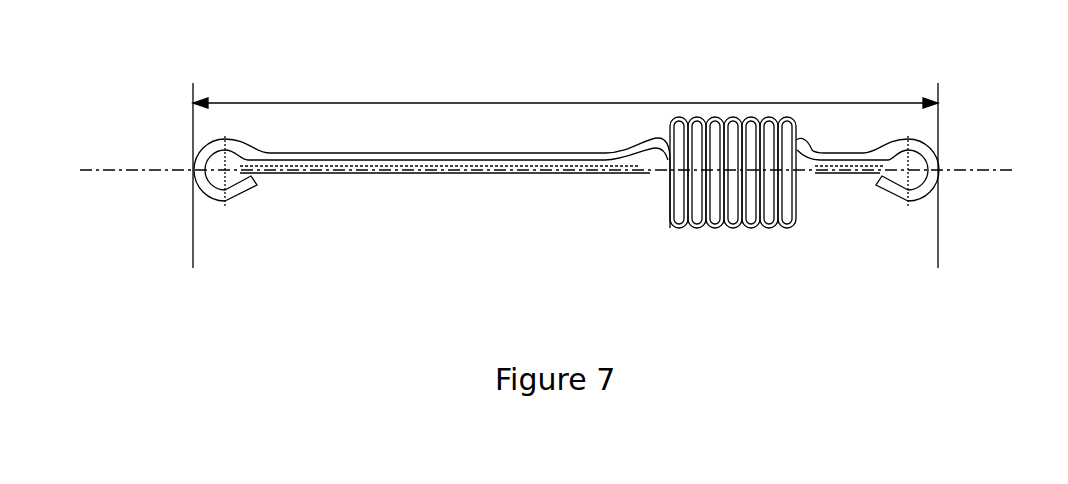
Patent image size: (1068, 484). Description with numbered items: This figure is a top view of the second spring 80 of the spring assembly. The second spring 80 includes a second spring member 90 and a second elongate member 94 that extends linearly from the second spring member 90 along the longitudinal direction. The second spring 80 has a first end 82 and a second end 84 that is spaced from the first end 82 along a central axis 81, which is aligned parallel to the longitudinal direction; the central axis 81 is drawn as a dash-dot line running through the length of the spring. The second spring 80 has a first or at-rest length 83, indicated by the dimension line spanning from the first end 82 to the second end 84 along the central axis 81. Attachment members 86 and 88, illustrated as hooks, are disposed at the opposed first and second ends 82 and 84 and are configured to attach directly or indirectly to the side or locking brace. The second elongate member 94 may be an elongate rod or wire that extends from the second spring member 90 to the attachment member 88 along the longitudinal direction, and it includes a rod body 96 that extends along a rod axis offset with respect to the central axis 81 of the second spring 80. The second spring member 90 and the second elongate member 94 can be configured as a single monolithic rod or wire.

The second spring 80 is at (362, 60).
The central axis 81 is at (977, 170).
The first end 82 is at (225, 210).
The at-rest length 83 is at (477, 103).
The second end 84 is at (907, 206).
The attachment member 86 is at (208, 198).
The attachment member 88 is at (925, 195).
The second spring member 90 is at (803, 233).
The second elongate member 94 is at (357, 176).
The rod body 96 is at (395, 160).